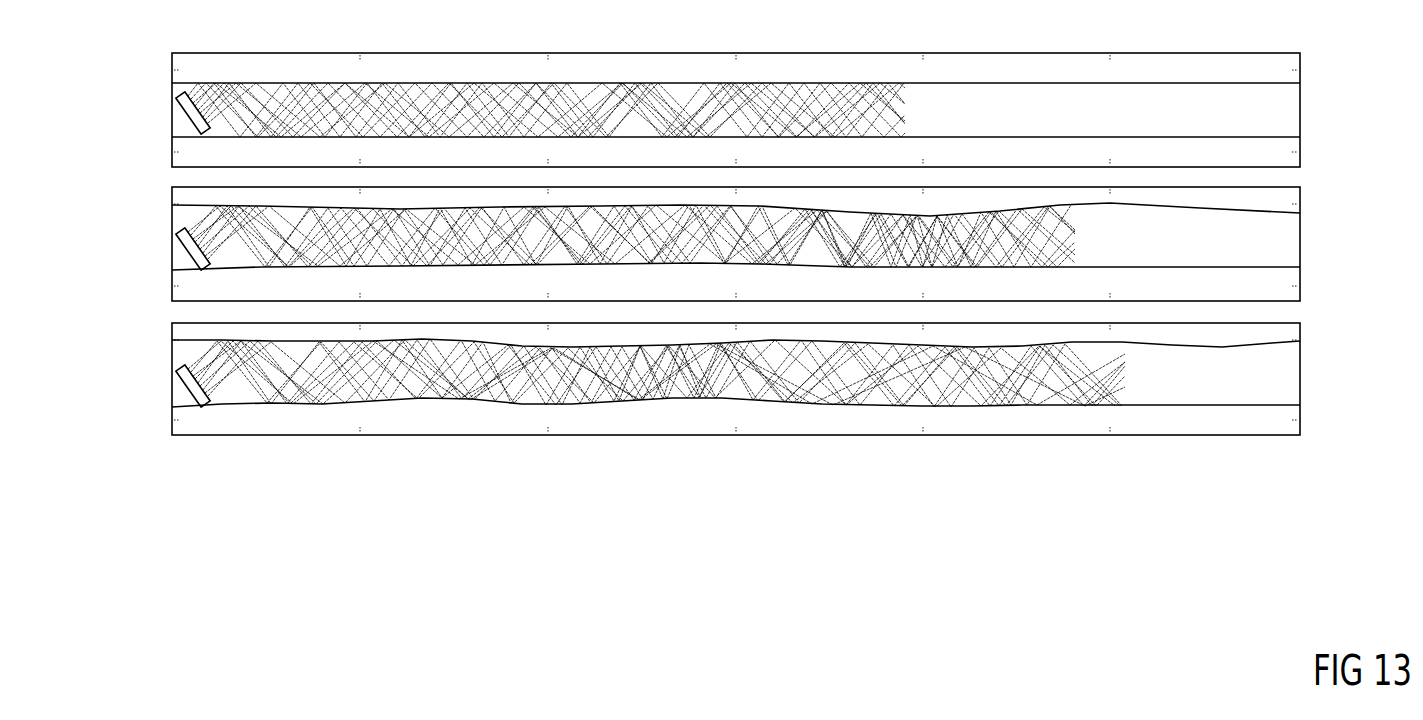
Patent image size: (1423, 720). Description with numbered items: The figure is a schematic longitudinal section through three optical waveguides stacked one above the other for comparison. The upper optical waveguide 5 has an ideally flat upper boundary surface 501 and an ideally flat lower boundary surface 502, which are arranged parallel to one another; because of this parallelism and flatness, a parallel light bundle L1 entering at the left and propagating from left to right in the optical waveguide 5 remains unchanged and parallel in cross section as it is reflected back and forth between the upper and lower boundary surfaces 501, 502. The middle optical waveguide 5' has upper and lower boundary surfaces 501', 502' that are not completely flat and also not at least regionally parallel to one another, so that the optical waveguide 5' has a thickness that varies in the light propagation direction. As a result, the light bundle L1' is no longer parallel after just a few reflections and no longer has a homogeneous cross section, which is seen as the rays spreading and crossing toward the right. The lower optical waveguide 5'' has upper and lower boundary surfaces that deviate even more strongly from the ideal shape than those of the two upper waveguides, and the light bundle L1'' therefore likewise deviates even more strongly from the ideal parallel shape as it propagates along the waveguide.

The optical waveguide 5 is at (763, 110).
The upper boundary surface 501 is at (776, 79).
The lower boundary surface 502 is at (776, 142).
The light bundle L1 is at (149, 108).
The optical waveguide 5' is at (766, 244).
The upper boundary surface 501' is at (780, 214).
The lower boundary surface 502' is at (780, 277).
The light bundle L1' is at (149, 244).
The optical waveguide 5'' is at (769, 379).
The light bundle L1'' is at (149, 380).